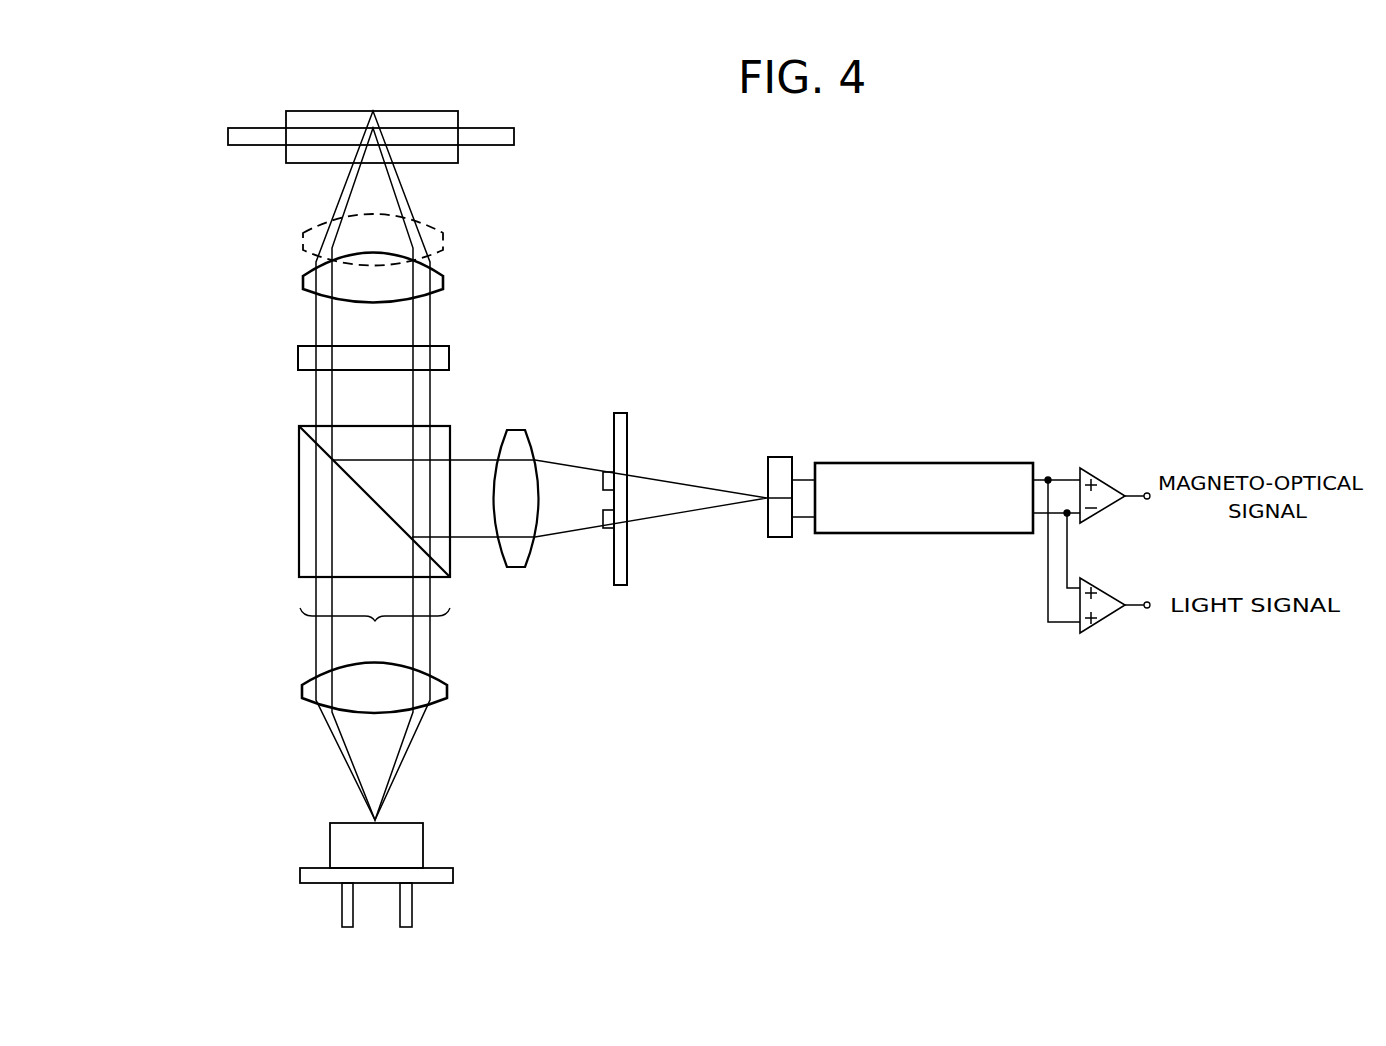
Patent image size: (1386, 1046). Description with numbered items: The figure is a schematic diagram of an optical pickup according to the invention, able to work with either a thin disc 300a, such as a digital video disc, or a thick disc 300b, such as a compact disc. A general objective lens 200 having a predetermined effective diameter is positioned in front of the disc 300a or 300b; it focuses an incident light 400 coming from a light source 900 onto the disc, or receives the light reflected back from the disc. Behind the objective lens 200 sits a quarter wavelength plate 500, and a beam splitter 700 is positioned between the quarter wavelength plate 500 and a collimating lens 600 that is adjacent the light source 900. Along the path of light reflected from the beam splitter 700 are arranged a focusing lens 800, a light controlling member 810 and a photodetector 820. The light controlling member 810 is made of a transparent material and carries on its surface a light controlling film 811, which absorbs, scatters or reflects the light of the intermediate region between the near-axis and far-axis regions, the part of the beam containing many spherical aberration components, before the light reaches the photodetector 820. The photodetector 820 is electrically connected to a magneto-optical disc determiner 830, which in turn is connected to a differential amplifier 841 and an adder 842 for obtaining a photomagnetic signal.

The objective lens 200 is at (452, 260).
The thin disc 300a is at (510, 137).
The thick disc 300b is at (290, 157).
The incident light 400 is at (533, 465).
The quarter wavelength plate 500 is at (449, 357).
The collimating lens 600 is at (447, 691).
The beam splitter 700 is at (299, 532).
The focusing lens 800 is at (518, 567).
The light controlling member 810 is at (621, 585).
The light controlling film 811 is at (602, 470).
The photodetector 820 is at (778, 537).
The magneto-optical disc determiner 830 is at (882, 533).
The differential amplifier 841 is at (1113, 487).
The adder 842 is at (1110, 620).
The light source 900 is at (457, 852).